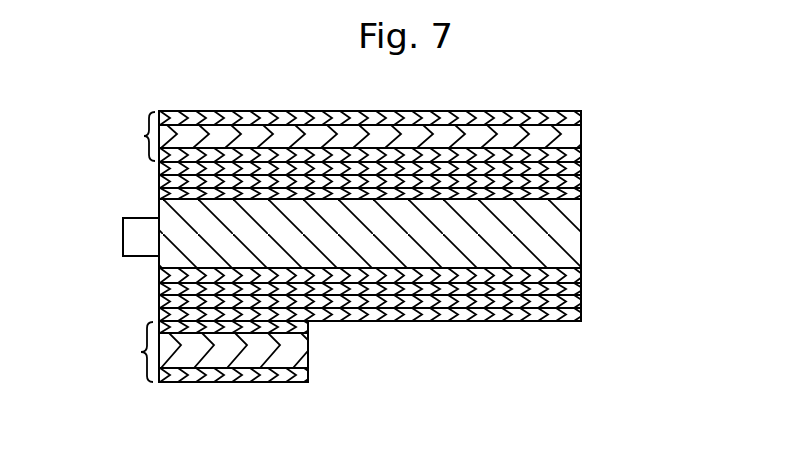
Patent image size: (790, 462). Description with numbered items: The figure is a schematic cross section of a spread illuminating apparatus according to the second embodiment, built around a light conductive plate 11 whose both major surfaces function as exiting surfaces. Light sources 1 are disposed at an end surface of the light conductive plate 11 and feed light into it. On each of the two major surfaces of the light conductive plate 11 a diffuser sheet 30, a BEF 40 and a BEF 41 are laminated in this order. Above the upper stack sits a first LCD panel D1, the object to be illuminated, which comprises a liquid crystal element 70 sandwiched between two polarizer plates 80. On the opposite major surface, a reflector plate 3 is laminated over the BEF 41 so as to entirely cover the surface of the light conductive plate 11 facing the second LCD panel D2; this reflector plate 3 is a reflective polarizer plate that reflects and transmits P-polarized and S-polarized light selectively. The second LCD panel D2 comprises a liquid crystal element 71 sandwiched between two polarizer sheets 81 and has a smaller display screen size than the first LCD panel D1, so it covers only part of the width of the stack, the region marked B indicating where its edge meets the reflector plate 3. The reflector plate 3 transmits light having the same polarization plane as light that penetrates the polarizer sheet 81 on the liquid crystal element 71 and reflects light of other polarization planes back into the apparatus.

The light source 1 is at (113, 218).
The reflector plate 3 is at (582, 318).
The light conductive plate 11 is at (552, 238).
The diffuser sheet 30 is at (582, 195).
The BEF 40 is at (584, 183).
The BEF 41 is at (584, 169).
The liquid crystal element 70 is at (584, 133).
The liquid crystal element 71 is at (292, 357).
The polarizer plate 80 is at (537, 112).
The polarizer sheet 81 is at (161, 324).
The first LCD panel D1 is at (143, 136).
The second LCD panel D2 is at (127, 352).
The region B is at (309, 322).